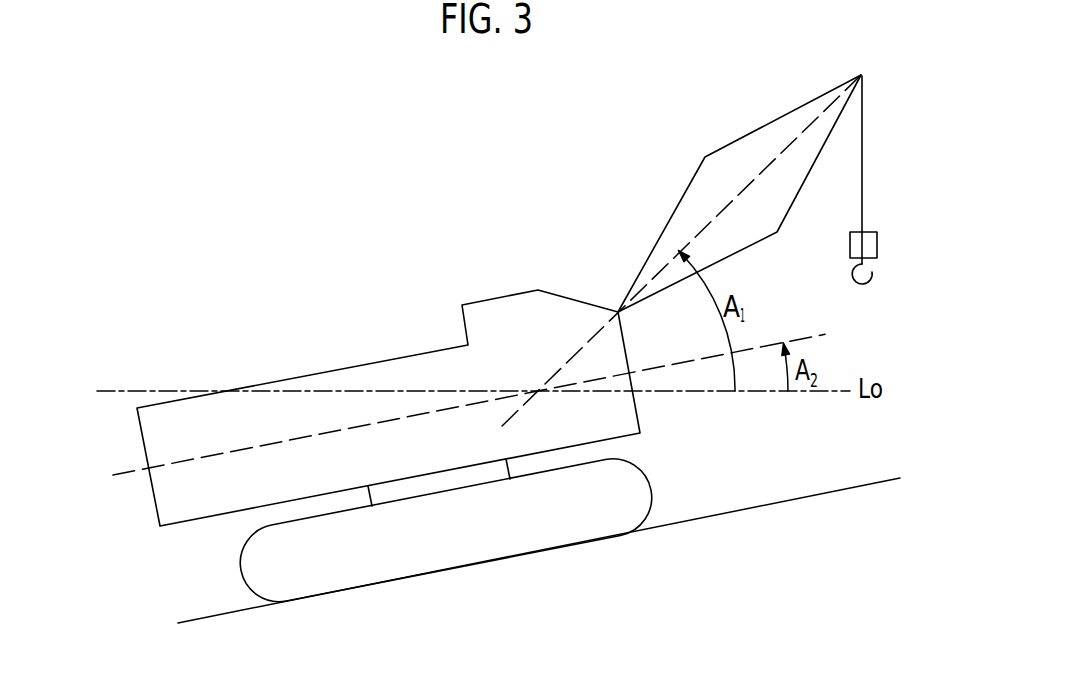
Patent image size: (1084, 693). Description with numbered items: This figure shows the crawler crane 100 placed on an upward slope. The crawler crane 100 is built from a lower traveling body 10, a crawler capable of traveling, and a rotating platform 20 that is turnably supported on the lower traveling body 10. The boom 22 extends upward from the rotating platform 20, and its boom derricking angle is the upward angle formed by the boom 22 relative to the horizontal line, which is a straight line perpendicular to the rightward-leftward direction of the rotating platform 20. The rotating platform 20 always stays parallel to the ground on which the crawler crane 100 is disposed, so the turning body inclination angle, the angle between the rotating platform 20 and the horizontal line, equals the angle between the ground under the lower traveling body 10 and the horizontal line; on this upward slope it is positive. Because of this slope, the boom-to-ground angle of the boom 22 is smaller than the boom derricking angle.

The crawler crane 100 is at (288, 223).
The lower traveling body 10 is at (650, 492).
The rotating platform 20 is at (640, 422).
The boom 22 is at (773, 122).